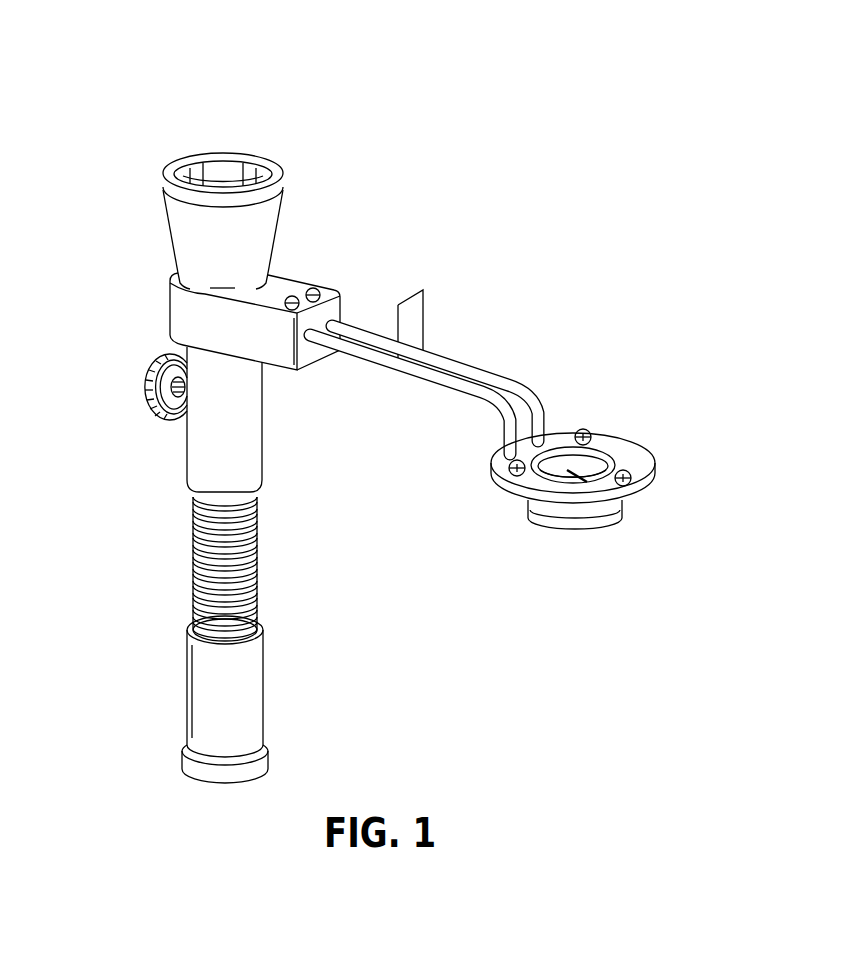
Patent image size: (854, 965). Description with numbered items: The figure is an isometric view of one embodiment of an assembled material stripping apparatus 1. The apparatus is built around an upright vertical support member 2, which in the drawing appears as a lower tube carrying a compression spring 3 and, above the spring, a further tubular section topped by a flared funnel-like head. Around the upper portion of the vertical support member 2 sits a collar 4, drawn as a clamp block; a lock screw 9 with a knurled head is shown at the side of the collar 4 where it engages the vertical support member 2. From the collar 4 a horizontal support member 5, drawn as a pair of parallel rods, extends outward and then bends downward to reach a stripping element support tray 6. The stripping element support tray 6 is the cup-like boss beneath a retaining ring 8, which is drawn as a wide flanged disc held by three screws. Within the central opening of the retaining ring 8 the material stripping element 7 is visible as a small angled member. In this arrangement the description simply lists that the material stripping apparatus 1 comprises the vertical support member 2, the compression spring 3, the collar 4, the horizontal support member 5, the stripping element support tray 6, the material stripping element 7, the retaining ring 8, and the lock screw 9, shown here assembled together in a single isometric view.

The material stripping apparatus 1 is at (400, 140).
The vertical support member 2 is at (187, 688).
The compression spring 3 is at (193, 556).
The collar 4 is at (187, 317).
The horizontal support member 5 is at (410, 294).
The stripping element support tray 6 is at (565, 517).
The material stripping element 7 is at (588, 474).
The retaining ring 8 is at (632, 462).
The lock screw 9 is at (141, 391).